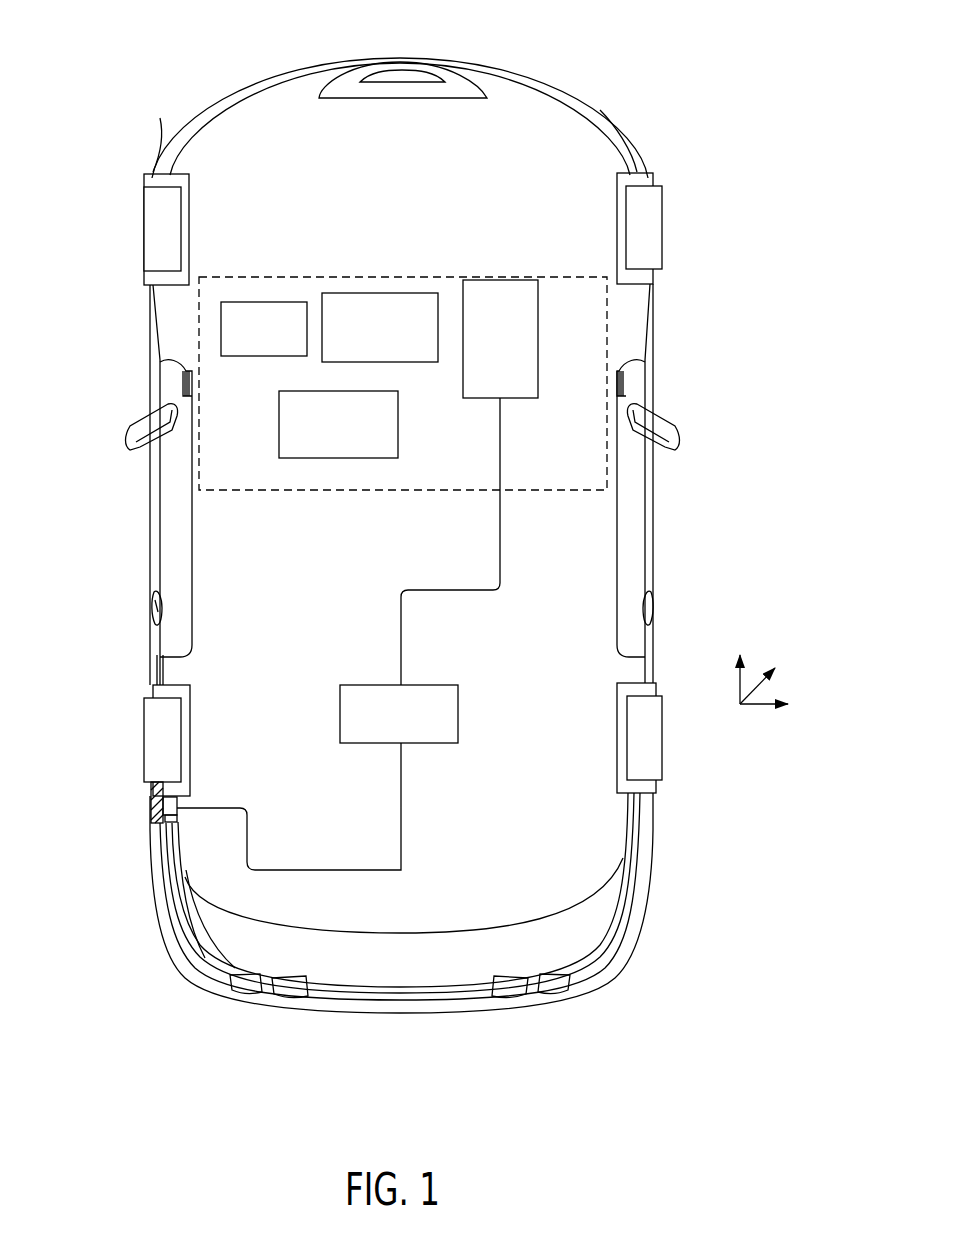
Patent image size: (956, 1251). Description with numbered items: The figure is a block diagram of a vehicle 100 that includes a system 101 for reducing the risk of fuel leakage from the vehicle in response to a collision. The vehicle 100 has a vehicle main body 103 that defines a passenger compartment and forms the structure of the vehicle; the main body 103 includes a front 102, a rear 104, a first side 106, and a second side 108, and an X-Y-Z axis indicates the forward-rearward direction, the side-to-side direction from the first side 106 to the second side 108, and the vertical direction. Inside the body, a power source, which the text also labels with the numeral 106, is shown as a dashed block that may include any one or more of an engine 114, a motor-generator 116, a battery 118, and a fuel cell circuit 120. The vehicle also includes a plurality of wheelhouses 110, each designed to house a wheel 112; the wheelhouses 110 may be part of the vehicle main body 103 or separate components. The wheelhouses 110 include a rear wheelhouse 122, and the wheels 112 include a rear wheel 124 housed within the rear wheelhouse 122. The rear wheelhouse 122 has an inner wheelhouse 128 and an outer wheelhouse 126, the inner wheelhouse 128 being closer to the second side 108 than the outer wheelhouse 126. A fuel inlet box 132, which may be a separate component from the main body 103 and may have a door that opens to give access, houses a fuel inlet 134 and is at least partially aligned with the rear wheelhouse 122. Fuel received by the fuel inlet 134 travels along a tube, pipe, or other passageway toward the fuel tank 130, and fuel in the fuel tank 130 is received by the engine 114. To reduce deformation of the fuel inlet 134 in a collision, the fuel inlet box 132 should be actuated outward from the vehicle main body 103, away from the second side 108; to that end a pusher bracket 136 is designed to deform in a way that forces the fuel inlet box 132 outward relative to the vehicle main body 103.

The vehicle 100 is at (131, 206).
The system for reducing risk of fuel leakage 101 is at (131, 296).
The front 102 is at (401, 58).
The vehicle main body 103 is at (637, 130).
The rear 104 is at (412, 1013).
The first side 106 is at (152, 522).
The second side 108 is at (657, 478).
The wheelhouses 110 is at (195, 194).
The wheel 112 is at (147, 176).
The engine 114 is at (499, 280).
The motor-generator 116 is at (379, 293).
The battery 118 is at (263, 302).
The fuel cell circuit 120 is at (398, 425).
The rear wheelhouse 122 is at (191, 706).
The rear wheel 124 is at (147, 721).
The outer wheelhouse 126 is at (165, 690).
The inner wheelhouse 128 is at (190, 786).
The fuel tank 130 is at (458, 712).
The fuel inlet box 132 is at (157, 824).
The fuel inlet 134 is at (178, 818).
The pusher bracket 136 is at (176, 820).